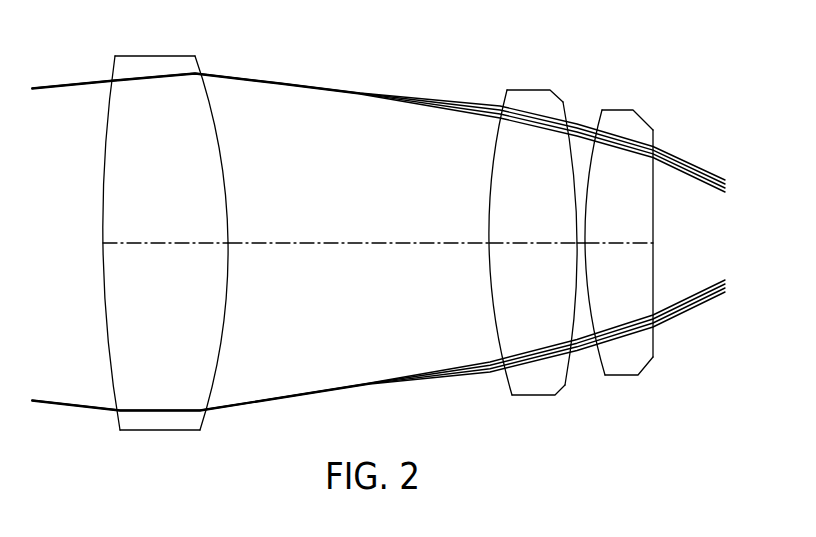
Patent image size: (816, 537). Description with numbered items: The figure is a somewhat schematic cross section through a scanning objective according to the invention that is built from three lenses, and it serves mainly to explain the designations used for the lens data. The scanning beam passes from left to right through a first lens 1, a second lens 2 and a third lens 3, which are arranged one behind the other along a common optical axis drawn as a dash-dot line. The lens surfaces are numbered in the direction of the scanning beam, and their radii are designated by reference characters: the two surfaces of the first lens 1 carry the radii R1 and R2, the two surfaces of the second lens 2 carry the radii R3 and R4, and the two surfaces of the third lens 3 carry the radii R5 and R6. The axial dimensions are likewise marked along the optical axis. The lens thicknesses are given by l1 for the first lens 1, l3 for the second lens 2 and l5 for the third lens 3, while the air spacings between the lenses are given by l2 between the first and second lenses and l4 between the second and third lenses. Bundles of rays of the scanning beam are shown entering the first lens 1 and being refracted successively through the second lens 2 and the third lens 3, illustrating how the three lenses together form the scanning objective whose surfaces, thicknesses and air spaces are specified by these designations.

The first lens 1 is at (167, 224).
The second lens 2 is at (508, 227).
The third lens 3 is at (643, 225).
The first lens surface radius R1 is at (104, 164).
The second lens surface radius R2 is at (222, 163).
The third lens surface radius R3 is at (488, 182).
The fourth lens surface radius R4 is at (573, 182).
The fifth lens surface radius R5 is at (588, 183).
The sixth lens surface radius R6 is at (655, 197).
The lens thickness l1 is at (165, 259).
The air spacing l2 is at (358, 259).
The lens thickness l3 is at (533, 259).
The air spacing l4 is at (584, 329).
The lens thickness l5 is at (619, 259).